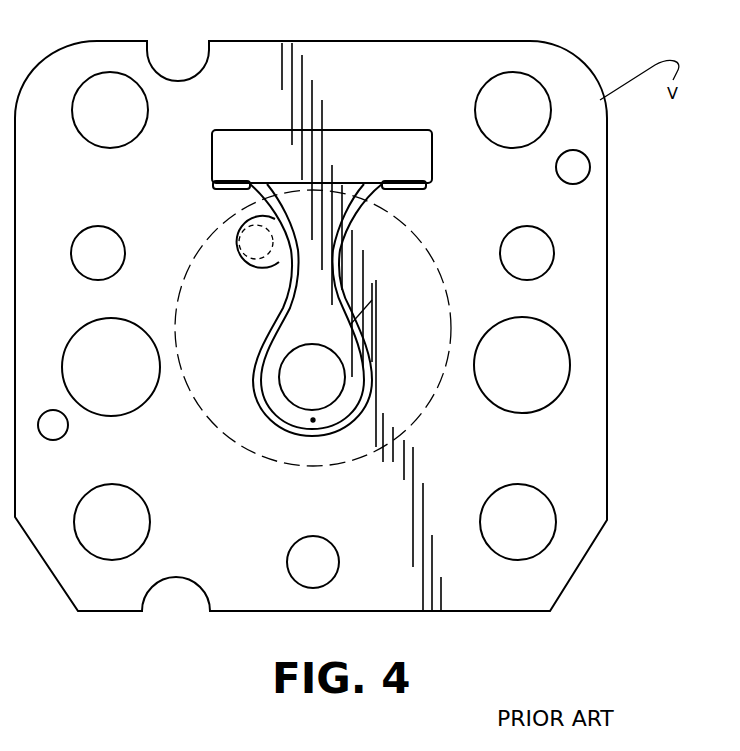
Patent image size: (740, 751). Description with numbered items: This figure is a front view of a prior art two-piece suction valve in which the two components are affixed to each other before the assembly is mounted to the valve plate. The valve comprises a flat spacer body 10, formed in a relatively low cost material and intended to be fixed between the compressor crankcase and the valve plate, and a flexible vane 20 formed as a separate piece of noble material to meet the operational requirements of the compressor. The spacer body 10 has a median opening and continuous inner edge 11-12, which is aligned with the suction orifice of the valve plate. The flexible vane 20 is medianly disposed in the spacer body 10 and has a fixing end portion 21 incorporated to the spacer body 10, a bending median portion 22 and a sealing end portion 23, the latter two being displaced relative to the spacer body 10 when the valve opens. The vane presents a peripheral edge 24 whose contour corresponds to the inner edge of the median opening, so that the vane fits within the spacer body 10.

The spacer body 10 is at (567, 303).
The median opening and continuous inner edge 11-12 is at (257, 373).
The flexible vane 20 is at (320, 328).
The fixing end portion 21 is at (262, 153).
The bending median portion 22 is at (311, 276).
The sealing end portion 23 is at (313, 422).
The peripheral edge 24 is at (350, 323).